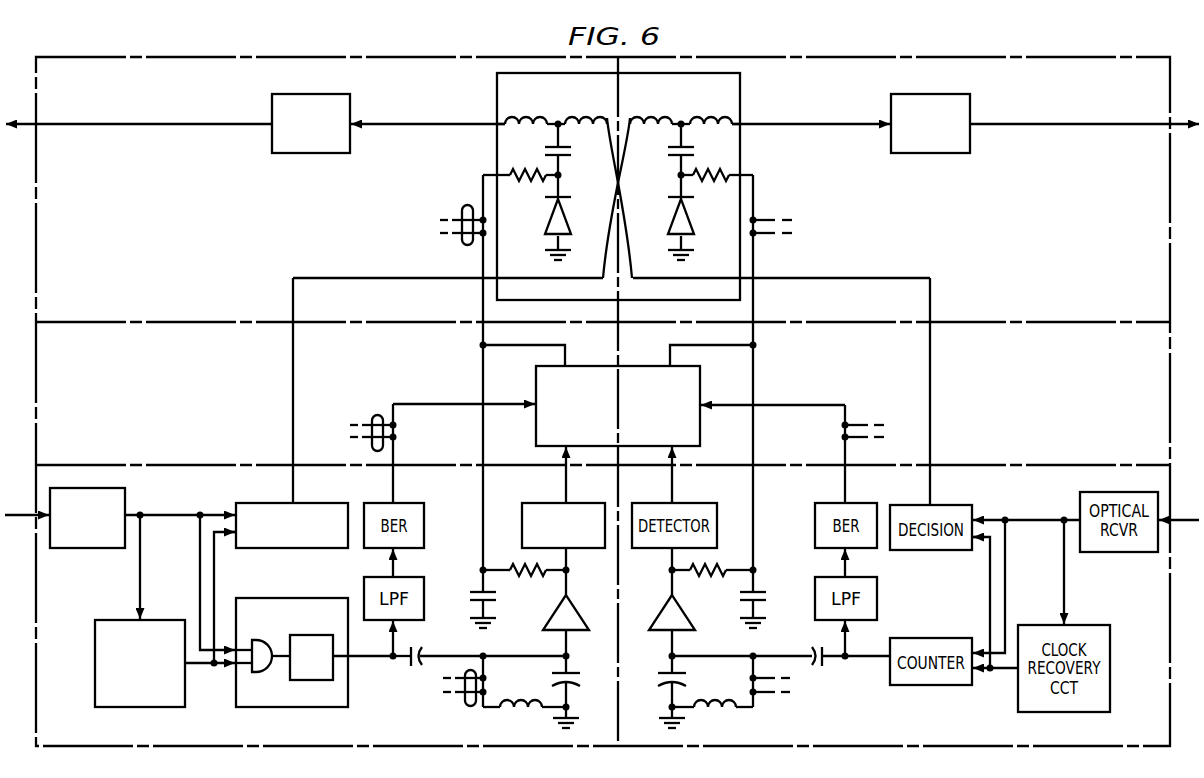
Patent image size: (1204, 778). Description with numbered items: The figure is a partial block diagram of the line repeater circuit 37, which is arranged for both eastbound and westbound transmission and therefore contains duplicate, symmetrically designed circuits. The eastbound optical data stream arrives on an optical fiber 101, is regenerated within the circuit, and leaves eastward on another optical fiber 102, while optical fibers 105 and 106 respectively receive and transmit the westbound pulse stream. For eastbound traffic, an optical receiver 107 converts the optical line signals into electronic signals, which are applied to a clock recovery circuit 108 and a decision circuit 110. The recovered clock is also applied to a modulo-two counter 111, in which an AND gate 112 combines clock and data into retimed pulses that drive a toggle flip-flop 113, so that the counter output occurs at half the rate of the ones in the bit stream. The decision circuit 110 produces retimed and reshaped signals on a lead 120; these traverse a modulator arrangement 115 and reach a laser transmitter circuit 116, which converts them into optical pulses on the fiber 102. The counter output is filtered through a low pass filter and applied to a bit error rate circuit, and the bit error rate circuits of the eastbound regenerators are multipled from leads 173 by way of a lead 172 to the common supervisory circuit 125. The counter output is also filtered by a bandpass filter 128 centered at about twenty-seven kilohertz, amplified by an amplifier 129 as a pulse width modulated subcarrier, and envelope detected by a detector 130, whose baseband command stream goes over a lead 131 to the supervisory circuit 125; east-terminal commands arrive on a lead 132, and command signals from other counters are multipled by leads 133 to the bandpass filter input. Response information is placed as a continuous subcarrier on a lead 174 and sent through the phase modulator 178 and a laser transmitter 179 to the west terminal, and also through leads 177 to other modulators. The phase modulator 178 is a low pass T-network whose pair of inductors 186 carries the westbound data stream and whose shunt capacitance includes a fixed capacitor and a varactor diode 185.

The line repeater circuit 37 is at (88, 87).
The optical fiber 101 is at (24, 509).
The optical fiber 102 is at (1186, 120).
The optical fiber 105 is at (1184, 514).
The optical fiber 106 is at (20, 120).
The optical receiver 107 is at (94, 548).
The clock recovery circuit 108 is at (95, 664).
The decision circuit 110 is at (281, 503).
The modulo-2 counter 111 is at (280, 600).
The AND gate 112 is at (262, 672).
The toggle flip-flop 113 is at (302, 680).
The modulator arrangement 115 is at (692, 99).
The laser transmitter circuit 116 is at (936, 94).
The lead 120 is at (293, 496).
The common supervisory circuit 125 is at (642, 364).
The bandpass filter 128 is at (534, 682).
The amplifier 129 is at (550, 610).
The detector 130 is at (592, 548).
The lead 131 is at (566, 478).
The lead 132 is at (672, 487).
The leads 133 is at (470, 706).
The lead 172 is at (425, 402).
The leads 173 is at (380, 412).
The lead 174 is at (480, 335).
The leads 177 is at (468, 201).
The phase modulator 178 is at (571, 99).
The laser transmitter 179 is at (320, 94).
The varactor diode 185 is at (548, 215).
The pair of inductors 186 is at (547, 130).